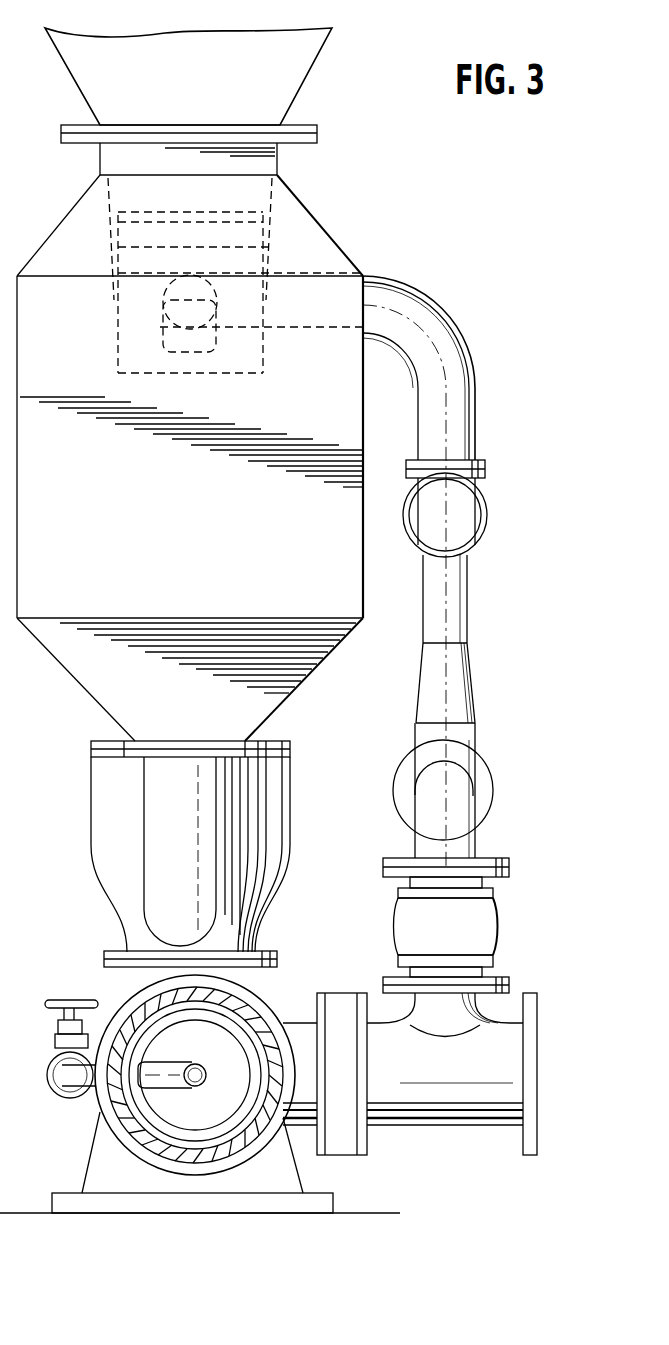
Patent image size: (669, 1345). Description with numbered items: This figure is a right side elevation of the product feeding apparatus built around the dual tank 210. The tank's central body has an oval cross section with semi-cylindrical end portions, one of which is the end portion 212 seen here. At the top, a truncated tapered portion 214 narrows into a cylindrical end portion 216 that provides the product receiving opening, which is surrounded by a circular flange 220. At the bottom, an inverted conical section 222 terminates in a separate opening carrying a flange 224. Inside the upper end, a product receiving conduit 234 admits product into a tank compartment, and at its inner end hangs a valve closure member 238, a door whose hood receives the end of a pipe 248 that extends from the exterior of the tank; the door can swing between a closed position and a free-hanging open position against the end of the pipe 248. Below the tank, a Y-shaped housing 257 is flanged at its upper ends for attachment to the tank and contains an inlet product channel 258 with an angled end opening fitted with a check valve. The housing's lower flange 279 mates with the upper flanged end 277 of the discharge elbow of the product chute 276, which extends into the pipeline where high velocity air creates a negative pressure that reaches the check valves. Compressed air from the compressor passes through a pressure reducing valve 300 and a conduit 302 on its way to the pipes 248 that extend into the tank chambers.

The dual tank 210 is at (362, 250).
The semi-cylindrical end portion 212 is at (350, 410).
The truncated tapered portion 214 is at (328, 232).
The cylindrical end portion 216 is at (268, 160).
The circular flange 220 is at (313, 140).
The inverted conical section 222 is at (302, 652).
The flange 224 is at (145, 741).
The product receiving conduit 234 is at (272, 250).
The valve closure member 238 is at (112, 259).
The pipe 248 is at (435, 313).
The Y-shaped housing 257 is at (128, 798).
The inlet product channel 258 is at (217, 846).
The product chute 276 is at (208, 1052).
The upper flanged end 277 is at (110, 967).
The flange 279 is at (114, 950).
The pressure reducing valve 300 is at (485, 926).
The conduit 302 is at (460, 815).